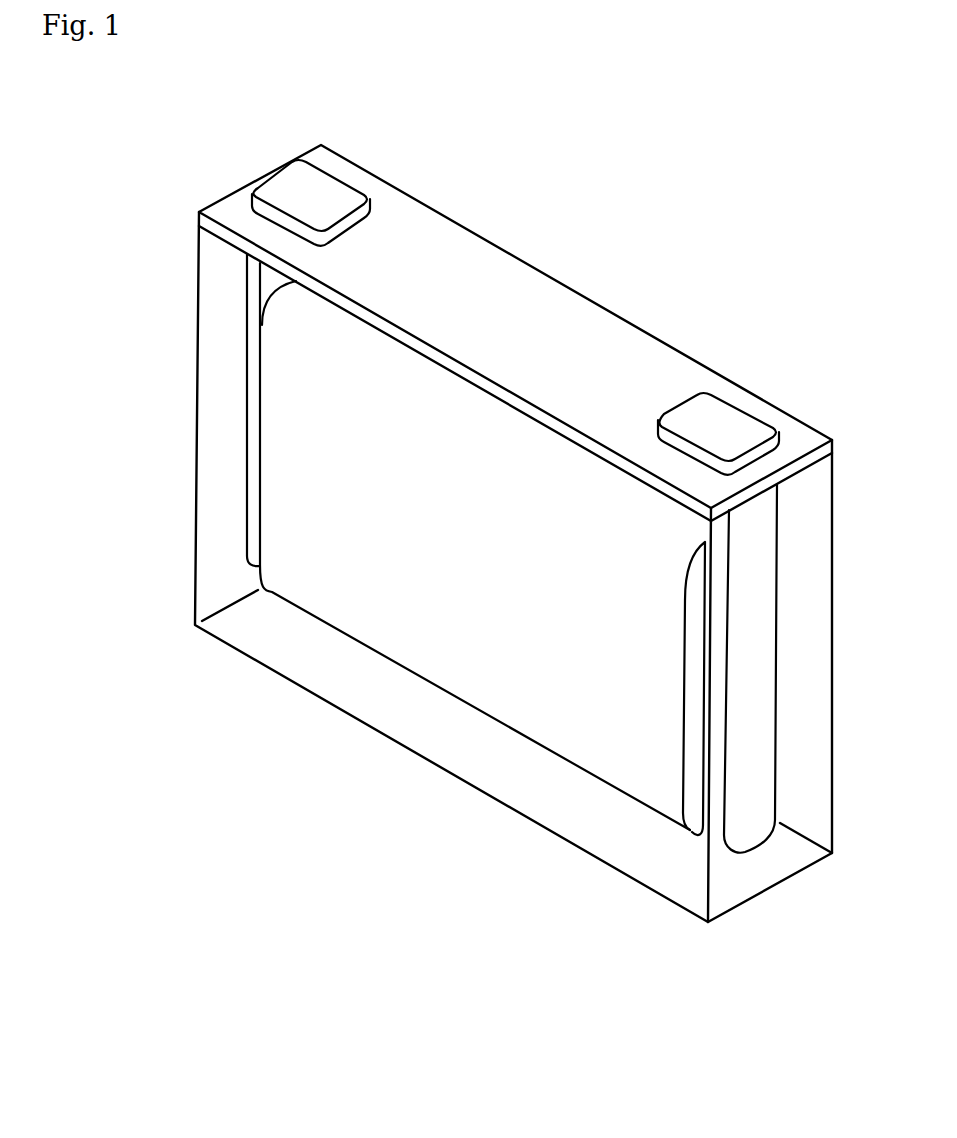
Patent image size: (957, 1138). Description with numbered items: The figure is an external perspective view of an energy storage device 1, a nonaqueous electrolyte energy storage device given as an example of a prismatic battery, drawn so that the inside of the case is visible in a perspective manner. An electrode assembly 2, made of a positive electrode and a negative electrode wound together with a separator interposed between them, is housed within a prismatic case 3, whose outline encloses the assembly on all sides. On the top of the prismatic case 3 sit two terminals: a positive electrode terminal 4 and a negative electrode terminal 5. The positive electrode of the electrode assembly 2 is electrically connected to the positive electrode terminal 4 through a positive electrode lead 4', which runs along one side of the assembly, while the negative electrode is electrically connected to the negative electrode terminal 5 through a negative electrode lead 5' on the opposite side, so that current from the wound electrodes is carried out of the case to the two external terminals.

The energy storage device 1 is at (503, 500).
The electrode assembly 2 is at (473, 564).
The prismatic case 3 is at (197, 356).
The positive electrode terminal 4 is at (311, 162).
The positive electrode lead 4' is at (202, 410).
The negative electrode terminal 5 is at (718, 393).
The negative electrode lead 5' is at (804, 669).